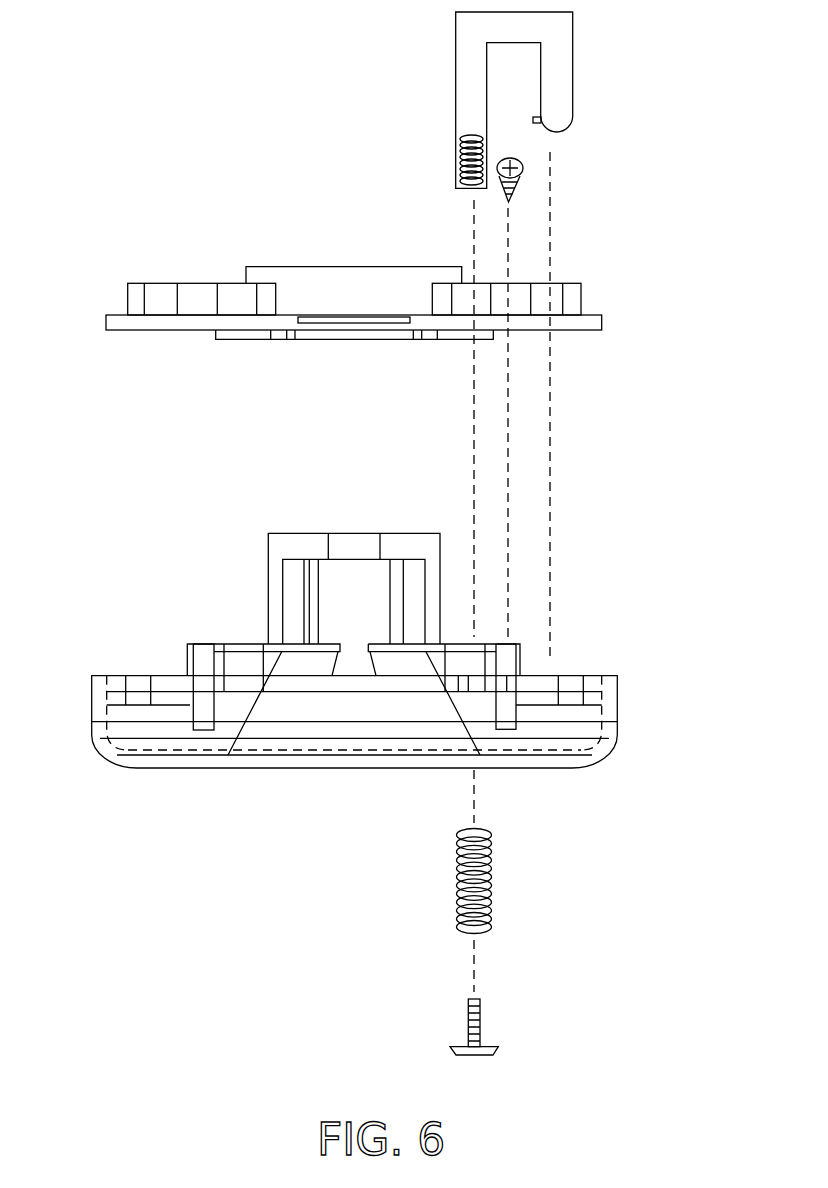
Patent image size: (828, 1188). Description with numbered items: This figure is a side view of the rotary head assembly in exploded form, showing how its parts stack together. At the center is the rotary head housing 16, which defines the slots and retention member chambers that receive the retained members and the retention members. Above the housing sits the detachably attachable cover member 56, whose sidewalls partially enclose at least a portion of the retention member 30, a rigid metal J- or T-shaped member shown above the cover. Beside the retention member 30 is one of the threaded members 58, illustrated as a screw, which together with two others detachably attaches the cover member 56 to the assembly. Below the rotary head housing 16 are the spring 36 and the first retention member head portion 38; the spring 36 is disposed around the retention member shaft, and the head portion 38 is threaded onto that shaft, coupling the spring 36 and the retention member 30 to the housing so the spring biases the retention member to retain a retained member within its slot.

The rotary head housing 16 is at (621, 693).
The retention member 30 is at (449, 78).
The spring 36 is at (491, 880).
The first retention member head portion 38 is at (498, 1052).
The cover member 56 is at (106, 319).
The threaded member 58 is at (523, 168).